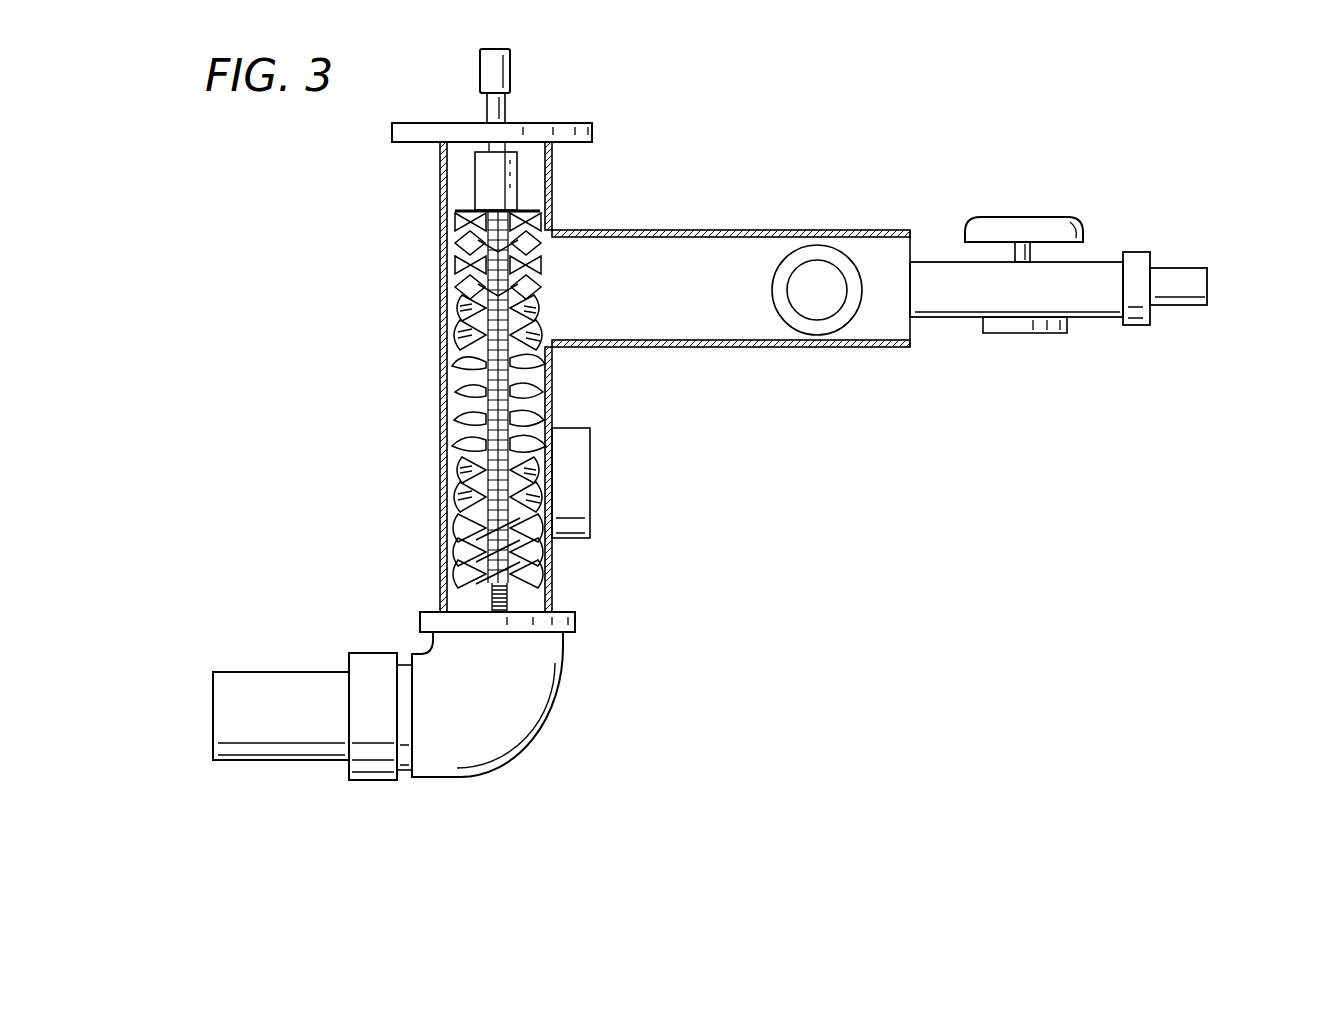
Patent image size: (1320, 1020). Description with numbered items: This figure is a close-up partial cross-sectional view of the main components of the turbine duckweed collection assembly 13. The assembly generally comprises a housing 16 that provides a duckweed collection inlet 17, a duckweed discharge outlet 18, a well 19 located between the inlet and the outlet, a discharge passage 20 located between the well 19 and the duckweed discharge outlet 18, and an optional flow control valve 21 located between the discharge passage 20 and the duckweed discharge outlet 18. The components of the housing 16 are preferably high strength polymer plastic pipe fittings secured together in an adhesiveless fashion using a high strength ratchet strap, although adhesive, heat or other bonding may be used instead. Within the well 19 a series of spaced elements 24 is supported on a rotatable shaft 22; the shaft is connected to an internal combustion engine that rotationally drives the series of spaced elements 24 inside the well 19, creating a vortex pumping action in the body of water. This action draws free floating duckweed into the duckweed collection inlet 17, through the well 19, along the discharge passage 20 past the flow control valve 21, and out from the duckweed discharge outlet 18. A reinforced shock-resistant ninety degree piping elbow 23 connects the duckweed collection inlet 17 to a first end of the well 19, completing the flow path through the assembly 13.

The turbine duckweed collection assembly 13 is at (392, 252).
The housing 16 is at (560, 577).
The duckweed collection inlet 17 is at (213, 708).
The duckweed discharge outlet 18 is at (1207, 282).
The well 19 is at (440, 469).
The discharge passage 20 is at (672, 304).
The flow control valve 21 is at (1017, 217).
The rotatable shaft 22 is at (505, 110).
The piping elbow 23 is at (547, 717).
The series of spaced elements 24 is at (462, 382).